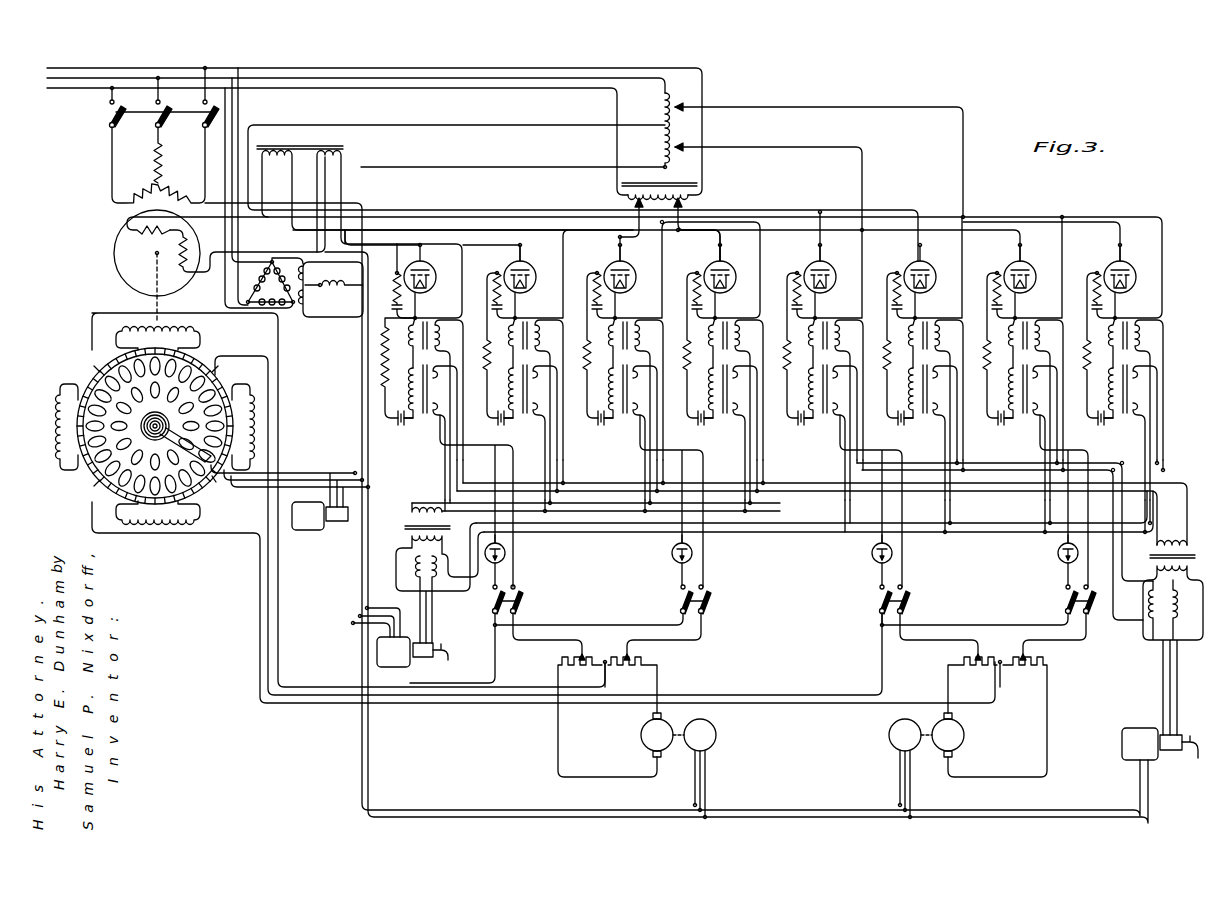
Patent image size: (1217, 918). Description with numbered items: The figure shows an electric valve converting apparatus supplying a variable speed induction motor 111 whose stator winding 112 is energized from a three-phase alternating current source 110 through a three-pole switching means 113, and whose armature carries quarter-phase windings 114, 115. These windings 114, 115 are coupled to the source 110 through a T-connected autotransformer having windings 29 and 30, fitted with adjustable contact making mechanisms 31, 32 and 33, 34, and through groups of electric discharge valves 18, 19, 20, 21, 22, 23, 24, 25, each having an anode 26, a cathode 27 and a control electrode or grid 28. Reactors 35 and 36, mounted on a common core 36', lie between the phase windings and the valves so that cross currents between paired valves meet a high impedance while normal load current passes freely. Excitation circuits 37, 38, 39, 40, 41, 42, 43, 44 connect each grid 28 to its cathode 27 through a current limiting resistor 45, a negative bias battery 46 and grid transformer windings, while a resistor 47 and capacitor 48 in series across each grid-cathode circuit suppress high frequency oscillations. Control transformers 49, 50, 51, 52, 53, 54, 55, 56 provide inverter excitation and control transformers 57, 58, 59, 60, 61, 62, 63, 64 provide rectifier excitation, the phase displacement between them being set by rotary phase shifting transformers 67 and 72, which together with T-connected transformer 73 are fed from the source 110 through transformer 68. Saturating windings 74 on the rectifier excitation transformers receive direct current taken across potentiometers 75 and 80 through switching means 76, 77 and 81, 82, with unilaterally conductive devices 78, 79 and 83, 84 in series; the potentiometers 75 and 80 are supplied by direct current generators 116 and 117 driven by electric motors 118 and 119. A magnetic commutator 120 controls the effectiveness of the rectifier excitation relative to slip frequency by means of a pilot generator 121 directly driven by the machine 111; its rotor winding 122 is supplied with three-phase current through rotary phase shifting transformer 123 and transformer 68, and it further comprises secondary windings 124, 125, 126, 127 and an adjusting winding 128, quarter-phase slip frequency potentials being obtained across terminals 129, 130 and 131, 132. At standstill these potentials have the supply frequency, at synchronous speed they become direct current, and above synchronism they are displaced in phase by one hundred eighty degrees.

The electric discharge valve 18 is at (428, 272).
The electric discharge valve 19 is at (528, 268).
The electric discharge valve 20 is at (628, 268).
The electric discharge valve 21 is at (728, 268).
The electric discharge valve 22 is at (828, 268).
The electric discharge valve 23 is at (928, 268).
The electric discharge valve 24 is at (1028, 268).
The electric discharge valve 25 is at (1128, 268).
The anode 26 is at (412, 262).
The cathode 27 is at (428, 288).
The control electrode or grid 28 is at (430, 277).
The winding 29 is at (669, 170).
The winding 30 is at (673, 98).
The adjustable contact making mechanism 31 is at (631, 203).
The adjustable contact making mechanism 32 is at (685, 201).
The adjustable contact making mechanism 33 is at (729, 144).
The adjustable contact making mechanism 34 is at (820, 153).
The reactor 35 is at (635, 194).
The reactor 36 is at (355, 150).
The common core 36' is at (374, 222).
The excitation circuit 37 is at (425, 432).
The excitation circuit 38 is at (525, 432).
The excitation circuit 39 is at (648, 476).
The excitation circuit 40 is at (725, 432).
The excitation circuit 41 is at (848, 476).
The excitation circuit 42 is at (925, 432).
The excitation circuit 43 is at (1041, 476).
The excitation circuit 44 is at (1125, 432).
The current limiting resistor 45 is at (385, 343).
The negative bias battery 46 is at (399, 425).
The resistor 47 is at (395, 273).
The capacitor 48 is at (392, 298).
The control transformer 49 is at (414, 322).
The control transformer 50 is at (514, 322).
The control transformer 51 is at (614, 322).
The control transformer 52 is at (714, 322).
The control transformer 53 is at (814, 322).
The control transformer 54 is at (914, 322).
The control transformer 55 is at (1014, 322).
The control transformer 56 is at (1114, 322).
The control transformer 57 is at (416, 418).
The control transformer 58 is at (530, 413).
The control transformer 59 is at (630, 413).
The control transformer 60 is at (730, 413).
The control transformer 61 is at (830, 413).
The control transformer 62 is at (930, 413).
The control transformer 63 is at (1030, 413).
The control transformer 64 is at (1130, 413).
The rotary phase shifting transformer 67 is at (1130, 728).
The transformer 68 is at (294, 192).
The rotary phase shifting transformer 72 is at (406, 663).
The T-connected transformer 73 is at (404, 520).
The saturating winding 74 is at (433, 415).
The potentiometer 75 is at (614, 655).
The switching means 76 is at (520, 598).
The switching means 77 is at (708, 598).
The unilaterally conductive device 78 is at (507, 549).
The unilaterally conductive device 79 is at (672, 551).
The potentiometer 80 is at (1002, 655).
The switching means 81 is at (908, 598).
The switching means 82 is at (1066, 598).
The unilaterally conductive device 83 is at (872, 551).
The unilaterally conductive device 84 is at (1058, 551).
The three-phase alternating current source 110 is at (90, 82).
The variable speed induction motor 111 is at (92, 235).
The stator winding 112 is at (123, 170).
The three-pole switching means 113 is at (108, 116).
The quarter-phase winding 114 is at (142, 232).
The quarter-phase winding 115 is at (181, 262).
The direct current generator 116 is at (641, 736).
The direct current generator 117 is at (964, 736).
The electric motor 118 is at (716, 736).
The electric motor 119 is at (889, 736).
The magnetic commutator 120 is at (200, 571).
The pilot generator 121 is at (222, 346).
The rotor winding 122 is at (168, 412).
The rotary phase shifting transformer 123 is at (302, 531).
The secondary winding 124 is at (196, 518).
The secondary winding 125 is at (250, 392).
The secondary winding 126 is at (120, 331).
The secondary winding 127 is at (55, 397).
The adjusting winding 128 is at (96, 462).
The terminal 129 is at (95, 486).
The terminal 130 is at (215, 375).
The terminal 131 is at (94, 369).
The terminal 132 is at (214, 482).